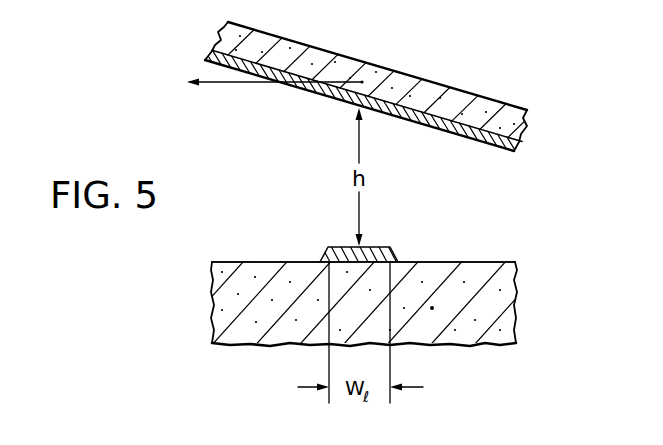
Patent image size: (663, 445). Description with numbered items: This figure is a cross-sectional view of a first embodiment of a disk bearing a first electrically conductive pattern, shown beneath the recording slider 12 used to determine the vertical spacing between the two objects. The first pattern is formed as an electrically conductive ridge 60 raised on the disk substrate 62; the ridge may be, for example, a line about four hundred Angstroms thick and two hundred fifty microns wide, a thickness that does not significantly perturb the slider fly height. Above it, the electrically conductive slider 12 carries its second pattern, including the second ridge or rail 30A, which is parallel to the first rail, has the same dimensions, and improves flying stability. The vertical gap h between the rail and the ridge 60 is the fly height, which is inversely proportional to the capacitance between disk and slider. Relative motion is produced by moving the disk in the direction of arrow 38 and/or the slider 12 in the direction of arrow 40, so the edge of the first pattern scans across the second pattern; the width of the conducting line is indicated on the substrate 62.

The recording slider 12 is at (433, 81).
The second ridge or rail 30A is at (515, 148).
The arrow (direction of disk motion) 38 is at (500, 277).
The arrow (direction of slider motion) 40 is at (260, 83).
The electrically conductive ridge 60 is at (381, 247).
The disk substrate 62 is at (505, 328).